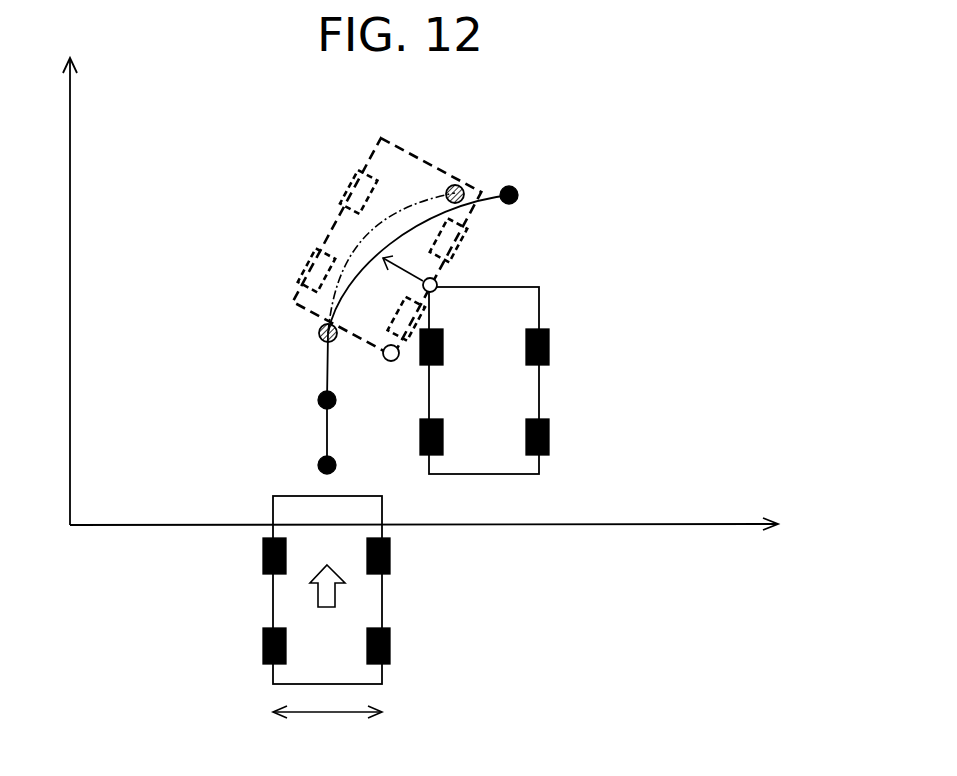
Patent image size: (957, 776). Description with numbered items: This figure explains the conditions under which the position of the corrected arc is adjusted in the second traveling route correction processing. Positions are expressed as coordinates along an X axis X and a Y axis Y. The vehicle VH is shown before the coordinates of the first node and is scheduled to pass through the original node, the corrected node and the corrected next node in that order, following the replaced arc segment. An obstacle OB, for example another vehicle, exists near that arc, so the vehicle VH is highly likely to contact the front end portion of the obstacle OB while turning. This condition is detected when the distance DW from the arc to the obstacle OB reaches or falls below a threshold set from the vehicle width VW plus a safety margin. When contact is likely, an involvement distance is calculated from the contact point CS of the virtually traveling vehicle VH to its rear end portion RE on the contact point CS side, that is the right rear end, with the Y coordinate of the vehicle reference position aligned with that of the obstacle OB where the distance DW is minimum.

The X coordinate X is at (424, 541).
The Y coordinate Y is at (56, 291).
The vehicle VH is at (273, 600).
The vehicle width VW is at (327, 726).
The obstacle OB is at (518, 475).
The distance DW is at (412, 278).
The contact point CS is at (436, 282).
The rear end portion RE is at (389, 361).